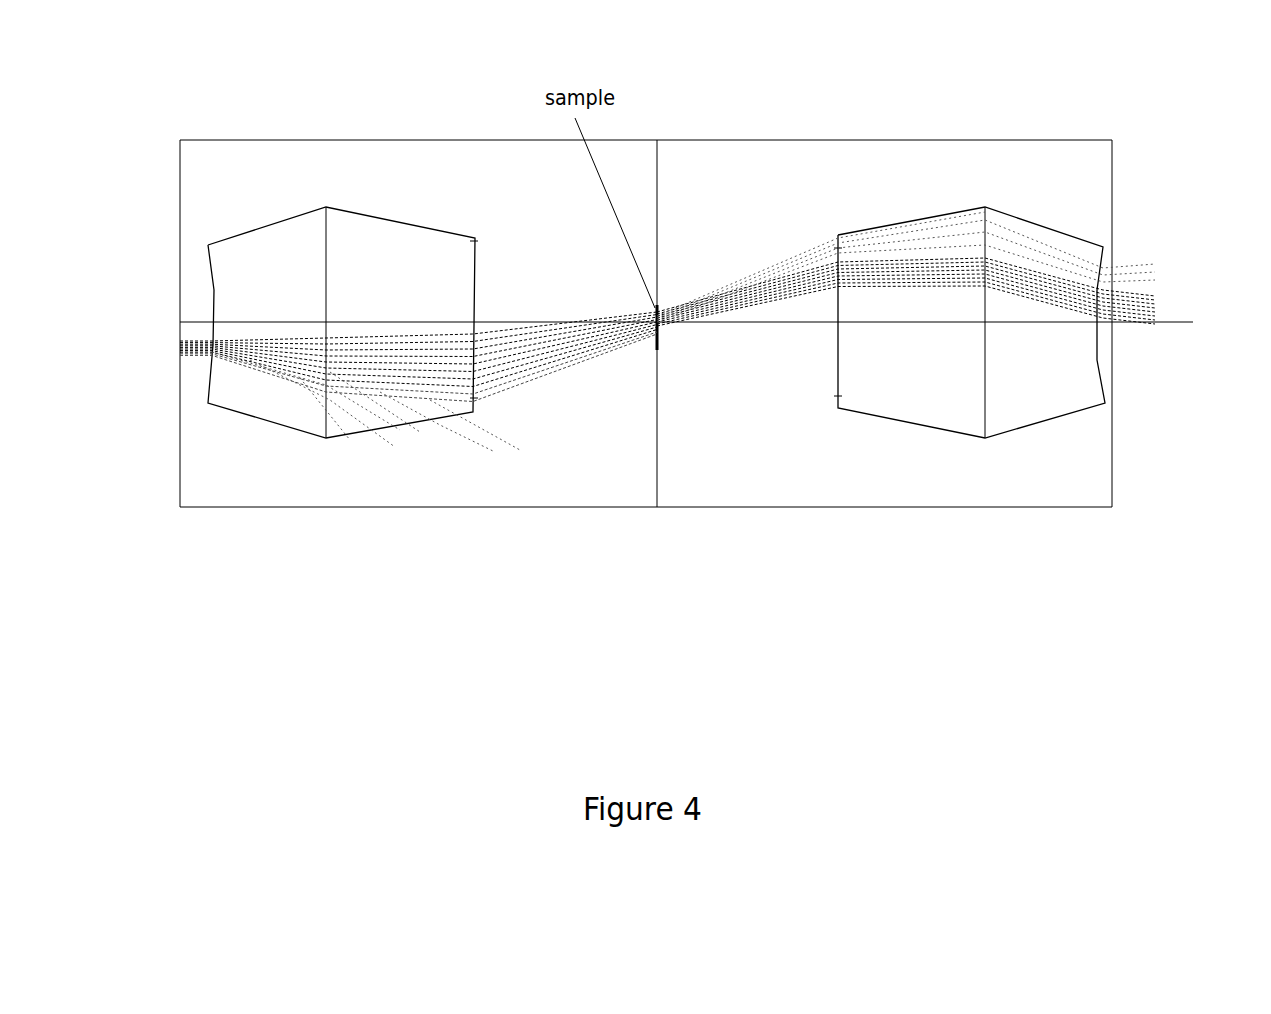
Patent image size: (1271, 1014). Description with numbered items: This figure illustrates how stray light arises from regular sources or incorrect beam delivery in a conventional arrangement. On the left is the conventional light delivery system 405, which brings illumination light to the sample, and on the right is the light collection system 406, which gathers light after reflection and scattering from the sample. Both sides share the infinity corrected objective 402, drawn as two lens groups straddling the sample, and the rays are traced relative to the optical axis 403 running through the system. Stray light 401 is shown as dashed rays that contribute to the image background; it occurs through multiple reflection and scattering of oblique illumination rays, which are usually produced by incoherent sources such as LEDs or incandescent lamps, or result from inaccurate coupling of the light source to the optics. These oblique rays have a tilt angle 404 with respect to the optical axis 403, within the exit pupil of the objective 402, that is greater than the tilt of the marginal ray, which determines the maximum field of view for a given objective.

The stray light 401 is at (392, 402).
The objective 402 is at (656, 402).
The optical axis 403 is at (1190, 322).
The tilt angle 404 is at (273, 330).
The light delivery system 405 is at (312, 140).
The light collection system 406 is at (873, 140).